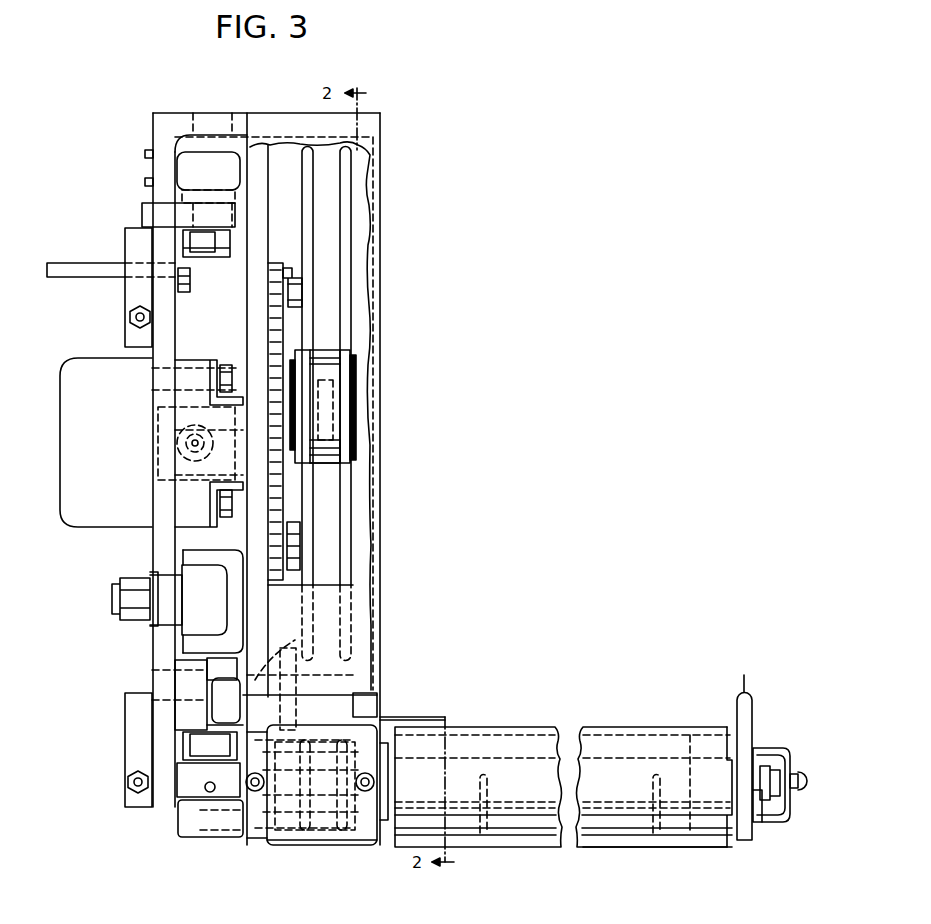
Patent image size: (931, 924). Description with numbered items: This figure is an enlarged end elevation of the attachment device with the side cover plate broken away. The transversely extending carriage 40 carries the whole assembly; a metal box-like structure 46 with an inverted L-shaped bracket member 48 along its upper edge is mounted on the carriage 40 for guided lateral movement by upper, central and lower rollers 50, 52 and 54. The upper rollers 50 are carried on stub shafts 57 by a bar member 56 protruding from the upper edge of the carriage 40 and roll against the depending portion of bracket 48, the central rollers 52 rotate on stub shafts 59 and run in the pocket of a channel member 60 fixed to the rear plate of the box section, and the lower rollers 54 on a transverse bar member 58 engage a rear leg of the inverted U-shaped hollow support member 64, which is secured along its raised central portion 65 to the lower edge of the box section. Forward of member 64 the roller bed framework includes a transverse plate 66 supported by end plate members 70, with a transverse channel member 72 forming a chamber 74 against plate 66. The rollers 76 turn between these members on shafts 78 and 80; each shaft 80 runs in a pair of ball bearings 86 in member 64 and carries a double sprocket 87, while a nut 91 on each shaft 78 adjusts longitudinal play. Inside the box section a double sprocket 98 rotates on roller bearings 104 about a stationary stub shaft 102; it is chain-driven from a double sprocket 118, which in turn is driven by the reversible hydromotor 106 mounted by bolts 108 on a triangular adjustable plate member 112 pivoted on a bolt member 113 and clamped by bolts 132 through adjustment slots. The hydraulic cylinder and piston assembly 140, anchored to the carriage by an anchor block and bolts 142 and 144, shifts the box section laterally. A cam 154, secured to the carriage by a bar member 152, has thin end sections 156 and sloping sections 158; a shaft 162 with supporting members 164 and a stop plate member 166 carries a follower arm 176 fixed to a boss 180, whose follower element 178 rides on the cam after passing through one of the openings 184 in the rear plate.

The carriage 40 is at (158, 248).
The box-like structure 46 is at (372, 122).
The inverted L-shaped bracket member 48 is at (155, 128).
The upper rollers 50 is at (180, 172).
The central rollers 52 is at (192, 605).
The lower rollers 54 is at (185, 825).
The bar member 56 is at (150, 216).
The stub shafts 57 is at (200, 197).
The transverse bar member 58 is at (185, 785).
The stub shafts 59 is at (112, 599).
The channel member 60 is at (195, 556).
The hollow support member 64 is at (365, 745).
The raised central portion 65 is at (375, 705).
The plate 66 is at (745, 746).
The plate members 70 is at (622, 840).
The transverse channel member 72 is at (783, 748).
The chamber 74 is at (772, 822).
The rollers 76 is at (528, 727).
The shaft 78 is at (756, 770).
The shaft 80 is at (290, 830).
The ball bearings 86 is at (370, 845).
The double sprocket 87 is at (303, 848).
The nut 91 is at (796, 790).
The double sprocket 98 is at (345, 335).
The stub shaft 102 is at (370, 405).
The roller bearings 104 is at (378, 362).
The reversible hydromotor 106 is at (90, 365).
The bolts 108 is at (258, 372).
The adjustable plate member 112 is at (268, 327).
The bolt member 113 is at (297, 283).
The double sprocket 118 is at (340, 465).
The bolts 132 is at (302, 552).
The hydraulic cylinder and piston assembly 140 is at (165, 465).
The anchor block 142 is at (185, 527).
The bolts 144 is at (228, 518).
The bar member 152 is at (186, 686).
The cam 154 is at (258, 670).
The thin elongated sections 156 is at (207, 668).
The sloping sections 158 is at (220, 702).
The shaft 162 is at (598, 760).
The supporting members 164 is at (498, 835).
The stop plate member 166 is at (655, 748).
The follower arm 176 is at (285, 706).
The follower element 178 is at (205, 715).
The boss 180 is at (333, 845).
The openings 184 is at (300, 632).